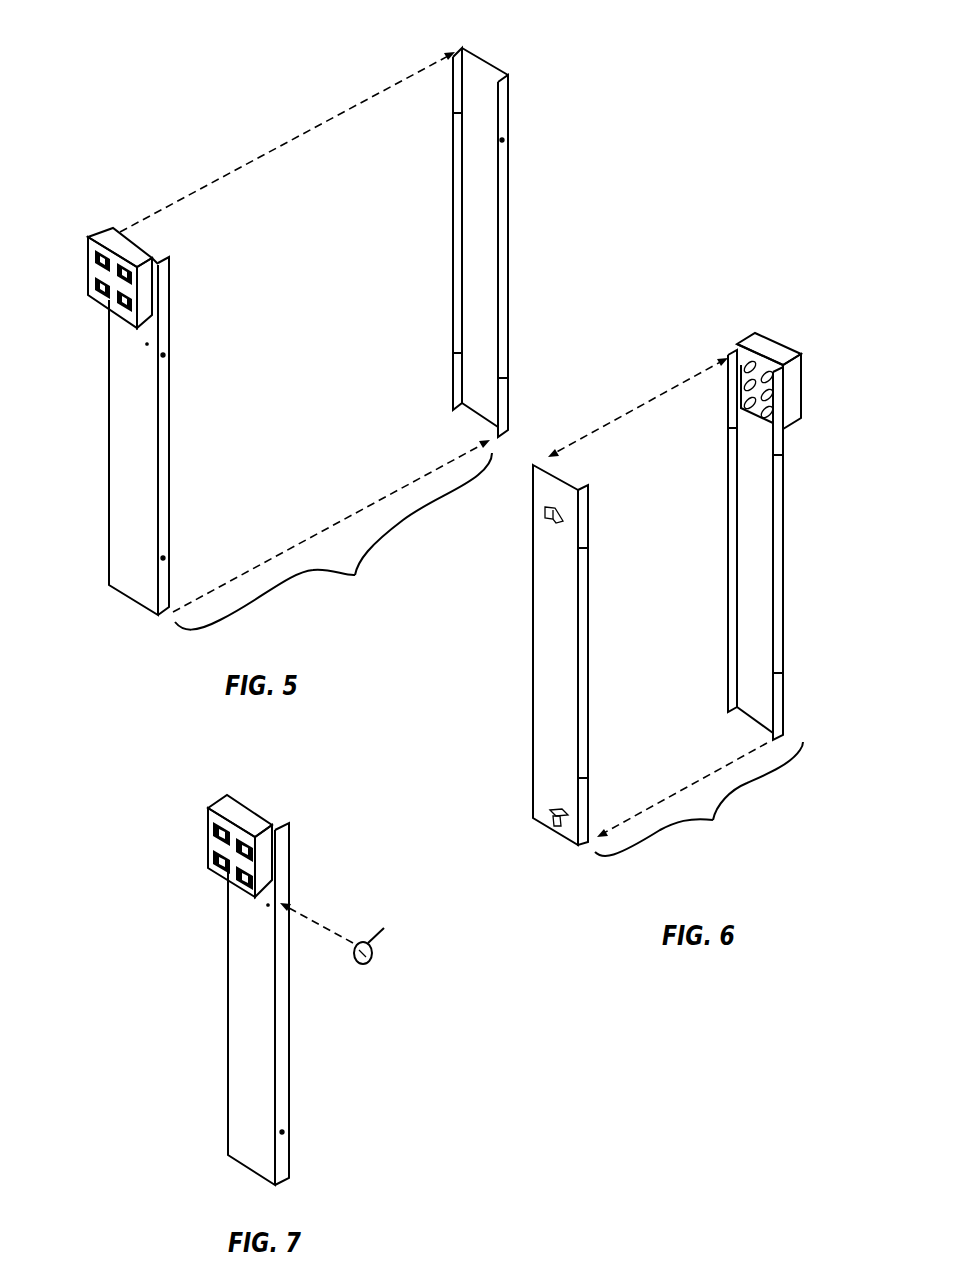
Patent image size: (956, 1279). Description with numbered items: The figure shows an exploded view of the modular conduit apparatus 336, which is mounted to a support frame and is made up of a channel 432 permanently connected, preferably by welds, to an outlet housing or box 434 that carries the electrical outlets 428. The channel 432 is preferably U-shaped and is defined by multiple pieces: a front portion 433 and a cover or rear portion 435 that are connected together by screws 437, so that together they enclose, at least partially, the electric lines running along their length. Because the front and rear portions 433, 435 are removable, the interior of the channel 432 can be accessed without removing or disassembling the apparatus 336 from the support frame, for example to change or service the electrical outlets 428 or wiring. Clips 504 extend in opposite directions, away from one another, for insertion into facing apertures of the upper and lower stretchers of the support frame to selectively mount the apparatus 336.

In FIG. 5, the apparatus 336 is at (296, 339).
In FIG. 6, the apparatus 336 is at (653, 592).
In FIG. 7, the apparatus 336 is at (180, 997).
In FIG. 5, the electrical outlets 428 is at (110, 238).
In FIG. 6, the electrical outlets 428 is at (785, 357).
In FIG. 7, the electrical outlets 428 is at (212, 872).
In FIG. 5, the channel 432 is at (307, 331).
In FIG. 6, the channel 432 is at (653, 597).
In FIG. 7, the channel 432 is at (260, 1004).
In FIG. 5, the front portion 433 is at (124, 510).
In FIG. 6, the front portion 433 is at (765, 603).
In FIG. 7, the front portion 433 is at (245, 1090).
In FIG. 5, the outlet box 434 is at (84, 265).
In FIG. 6, the outlet box 434 is at (794, 378).
In FIG. 7, the outlet box 434 is at (211, 841).
In FIG. 5, the rear portion 435 is at (488, 195).
In FIG. 6, the rear portion 435 is at (545, 670).
In FIG. 7, the screws 437 is at (354, 933).
In FIG. 6, the clips 504 is at (545, 515).